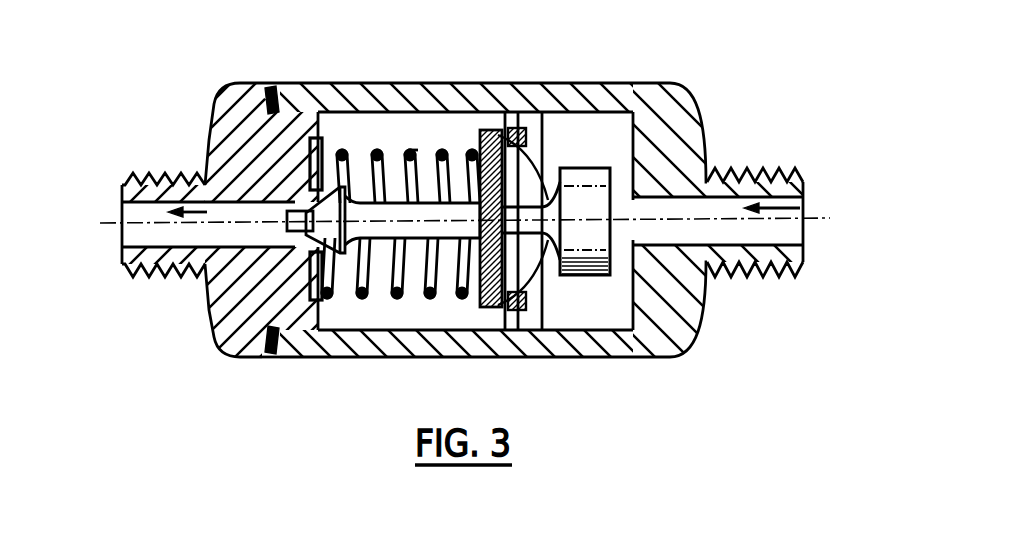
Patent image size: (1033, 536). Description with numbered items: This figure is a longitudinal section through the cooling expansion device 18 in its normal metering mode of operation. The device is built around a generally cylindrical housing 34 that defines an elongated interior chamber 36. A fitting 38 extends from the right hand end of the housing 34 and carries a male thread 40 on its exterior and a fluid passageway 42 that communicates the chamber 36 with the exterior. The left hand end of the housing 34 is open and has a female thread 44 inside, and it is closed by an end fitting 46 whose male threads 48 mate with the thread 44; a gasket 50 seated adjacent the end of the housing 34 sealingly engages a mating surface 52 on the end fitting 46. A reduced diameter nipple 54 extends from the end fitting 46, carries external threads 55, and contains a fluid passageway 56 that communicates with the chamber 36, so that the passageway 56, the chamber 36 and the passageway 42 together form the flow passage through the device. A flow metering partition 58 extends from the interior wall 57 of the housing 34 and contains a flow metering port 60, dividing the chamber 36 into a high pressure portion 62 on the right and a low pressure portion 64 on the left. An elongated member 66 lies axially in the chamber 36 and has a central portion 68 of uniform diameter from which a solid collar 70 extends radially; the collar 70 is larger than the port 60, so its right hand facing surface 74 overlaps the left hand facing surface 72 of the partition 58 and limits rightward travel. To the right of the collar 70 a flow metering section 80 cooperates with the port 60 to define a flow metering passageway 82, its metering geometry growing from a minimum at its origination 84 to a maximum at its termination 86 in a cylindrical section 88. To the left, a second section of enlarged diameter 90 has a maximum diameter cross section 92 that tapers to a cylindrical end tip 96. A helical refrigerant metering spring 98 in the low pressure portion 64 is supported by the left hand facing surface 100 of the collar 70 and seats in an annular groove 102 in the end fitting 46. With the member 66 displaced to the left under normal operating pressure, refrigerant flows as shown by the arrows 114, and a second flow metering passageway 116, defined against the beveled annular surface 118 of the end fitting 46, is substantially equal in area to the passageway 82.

The cooling expansion device 18 is at (184, 356).
The housing 34 is at (538, 86).
The chamber 36 is at (413, 118).
The fitting 38 is at (806, 185).
The male thread 40 is at (765, 176).
The fluid passageway 42 is at (749, 245).
The female thread 44 is at (303, 332).
The end fitting 46 is at (210, 102).
The male threads 48 is at (313, 115).
The gasket 50 is at (270, 350).
The mating surface 52 is at (271, 90).
The nipple 54 is at (118, 191).
The outlet threads 55 is at (152, 177).
The fluid passageway 56 is at (231, 246).
The interior wall 57 is at (393, 322).
The flow metering partition 58 is at (584, 341).
The flow metering port 60 is at (549, 176).
The high pressure portion 62 is at (588, 329).
The low pressure portion 64 is at (400, 331).
The elongated member 66 is at (371, 181).
The central portion 68 is at (430, 165).
The collar 70 is at (487, 122).
The left hand facing surface 72 is at (528, 320).
The right hand facing surface 74 is at (523, 128).
The flow metering section 80 is at (556, 166).
The flow metering passageway 82 is at (531, 292).
The origination 84 is at (522, 217).
The termination 86 is at (570, 279).
The cylindrical section 88 is at (570, 216).
The second section of enlarged diameter 90 is at (412, 220).
The maximum diameter cross section 92 is at (337, 292).
The cylindrical end tip 96 is at (321, 162).
The refrigerant metering spring 98 is at (368, 386).
The left hand facing surface 100 is at (458, 306).
The annular groove 102 is at (208, 333).
The arrows 114 is at (481, 123).
The second flow metering passageway 116 is at (204, 290).
The beveled annular surface 118 is at (300, 202).